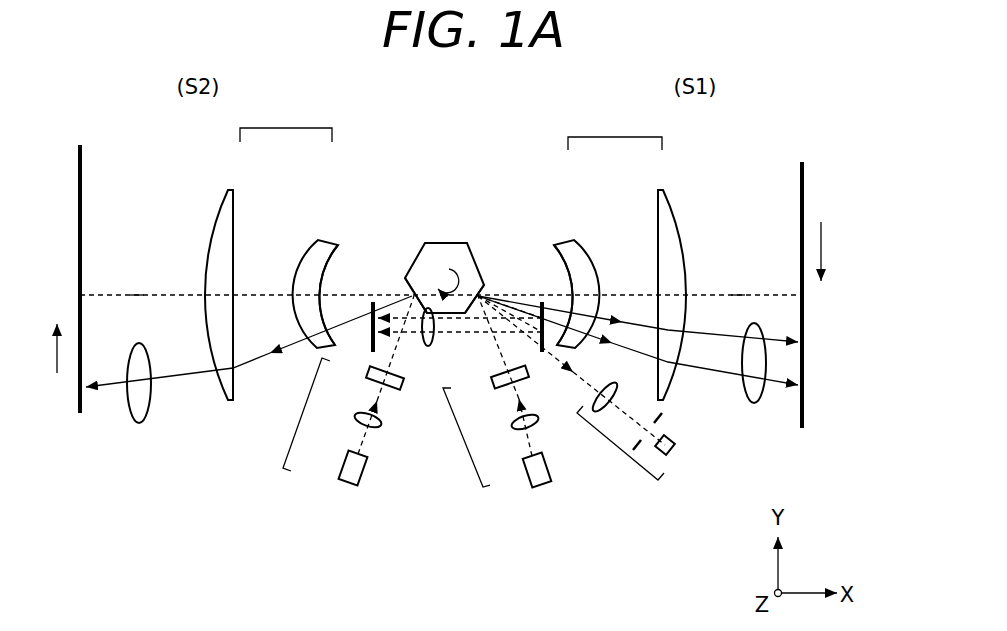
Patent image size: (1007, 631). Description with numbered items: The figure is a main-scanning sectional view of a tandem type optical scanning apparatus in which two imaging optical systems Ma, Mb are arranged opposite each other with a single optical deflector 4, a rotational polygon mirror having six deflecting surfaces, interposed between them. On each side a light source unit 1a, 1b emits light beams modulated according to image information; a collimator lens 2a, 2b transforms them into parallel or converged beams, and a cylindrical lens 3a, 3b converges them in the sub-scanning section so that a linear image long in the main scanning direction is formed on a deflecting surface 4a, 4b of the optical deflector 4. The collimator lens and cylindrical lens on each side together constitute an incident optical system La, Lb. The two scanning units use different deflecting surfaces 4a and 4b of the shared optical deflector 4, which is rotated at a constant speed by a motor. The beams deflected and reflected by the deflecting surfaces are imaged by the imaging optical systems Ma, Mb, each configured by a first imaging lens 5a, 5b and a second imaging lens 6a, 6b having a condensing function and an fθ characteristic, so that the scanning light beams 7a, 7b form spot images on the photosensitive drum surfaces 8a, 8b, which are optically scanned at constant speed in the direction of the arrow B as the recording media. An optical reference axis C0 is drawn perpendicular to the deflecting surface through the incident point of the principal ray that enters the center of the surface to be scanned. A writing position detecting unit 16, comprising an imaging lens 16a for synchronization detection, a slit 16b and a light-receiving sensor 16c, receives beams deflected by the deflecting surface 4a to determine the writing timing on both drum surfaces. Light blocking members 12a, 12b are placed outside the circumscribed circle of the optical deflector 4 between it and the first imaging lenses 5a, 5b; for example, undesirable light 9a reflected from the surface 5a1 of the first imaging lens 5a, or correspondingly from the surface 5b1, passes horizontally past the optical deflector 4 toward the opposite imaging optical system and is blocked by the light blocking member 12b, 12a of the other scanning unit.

The light source unit 1a is at (526, 471).
The light source unit 1b is at (342, 468).
The collimator lens 2a is at (511, 424).
The collimator lens 2b is at (353, 421).
The cylindrical lens 3a is at (496, 384).
The cylindrical lens 3b is at (366, 378).
The optical deflector 4 is at (445, 243).
The deflecting surface 4a is at (486, 284).
The deflecting surface 4b is at (411, 282).
The first imaging lens 5a is at (578, 243).
The surface of the first imaging lens 5a1 is at (555, 243).
The first imaging lens 5b is at (322, 240).
The surface of the first imaging lens 5b1 is at (328, 263).
The second imaging lens 6a is at (660, 190).
The second imaging lens 6b is at (230, 190).
The scanning light beams 7a is at (757, 404).
The scanning light beams 7b is at (144, 420).
The photosensitive drum surface 8a is at (806, 407).
The photosensitive drum surface 8b is at (80, 412).
The undesirable light 9a is at (433, 340).
The light blocking member 12a is at (542, 352).
The light blocking member 12b is at (373, 304).
The writing position detecting unit 16 is at (620, 443).
The imaging lens for synchronization detection 16a is at (620, 396).
The slit 16b is at (663, 421).
The light-receiving sensor 16c is at (671, 451).
The arrow B is at (439, 297).
The optical reference axis C0 is at (138, 294).
The incident optical system La is at (463, 437).
The incident optical system Lb is at (295, 414).
The imaging optical system Ma is at (615, 130).
The imaging optical system Mb is at (286, 121).